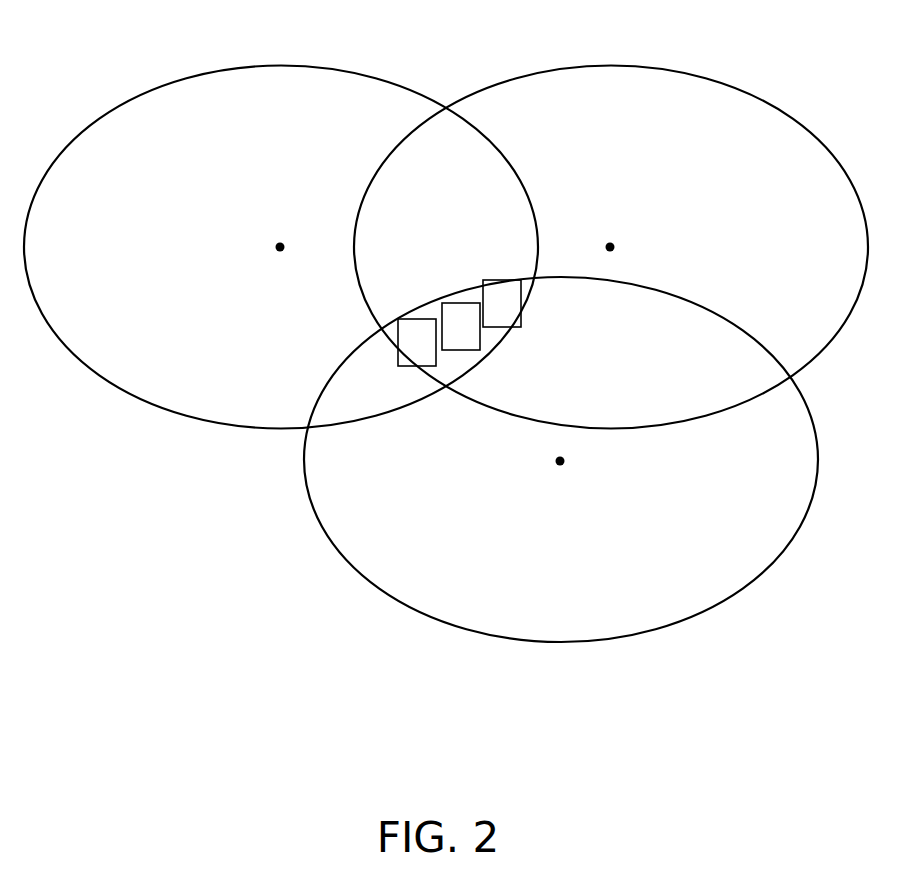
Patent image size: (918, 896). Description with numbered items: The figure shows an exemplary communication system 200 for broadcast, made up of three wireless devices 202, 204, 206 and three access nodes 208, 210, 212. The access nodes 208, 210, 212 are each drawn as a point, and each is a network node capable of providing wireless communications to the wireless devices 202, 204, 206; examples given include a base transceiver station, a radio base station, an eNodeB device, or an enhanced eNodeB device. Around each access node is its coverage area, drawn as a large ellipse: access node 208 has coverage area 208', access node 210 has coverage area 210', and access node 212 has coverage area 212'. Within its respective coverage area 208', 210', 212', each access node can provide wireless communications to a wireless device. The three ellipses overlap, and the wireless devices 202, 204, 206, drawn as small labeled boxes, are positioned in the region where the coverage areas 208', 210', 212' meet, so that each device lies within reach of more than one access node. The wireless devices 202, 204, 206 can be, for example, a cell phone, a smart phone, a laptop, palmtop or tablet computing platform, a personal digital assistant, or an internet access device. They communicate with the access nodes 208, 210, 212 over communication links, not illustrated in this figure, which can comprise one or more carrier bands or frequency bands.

The communication system 200 is at (184, 752).
The wireless device 202 is at (417, 342).
The wireless device 204 is at (461, 326).
The wireless device 206 is at (502, 303).
The access node 208 is at (255, 228).
The access node 210 is at (634, 228).
The access node 212 is at (591, 484).
The coverage area 208' is at (281, 226).
The coverage area 210' is at (611, 226).
The coverage area 212' is at (561, 480).